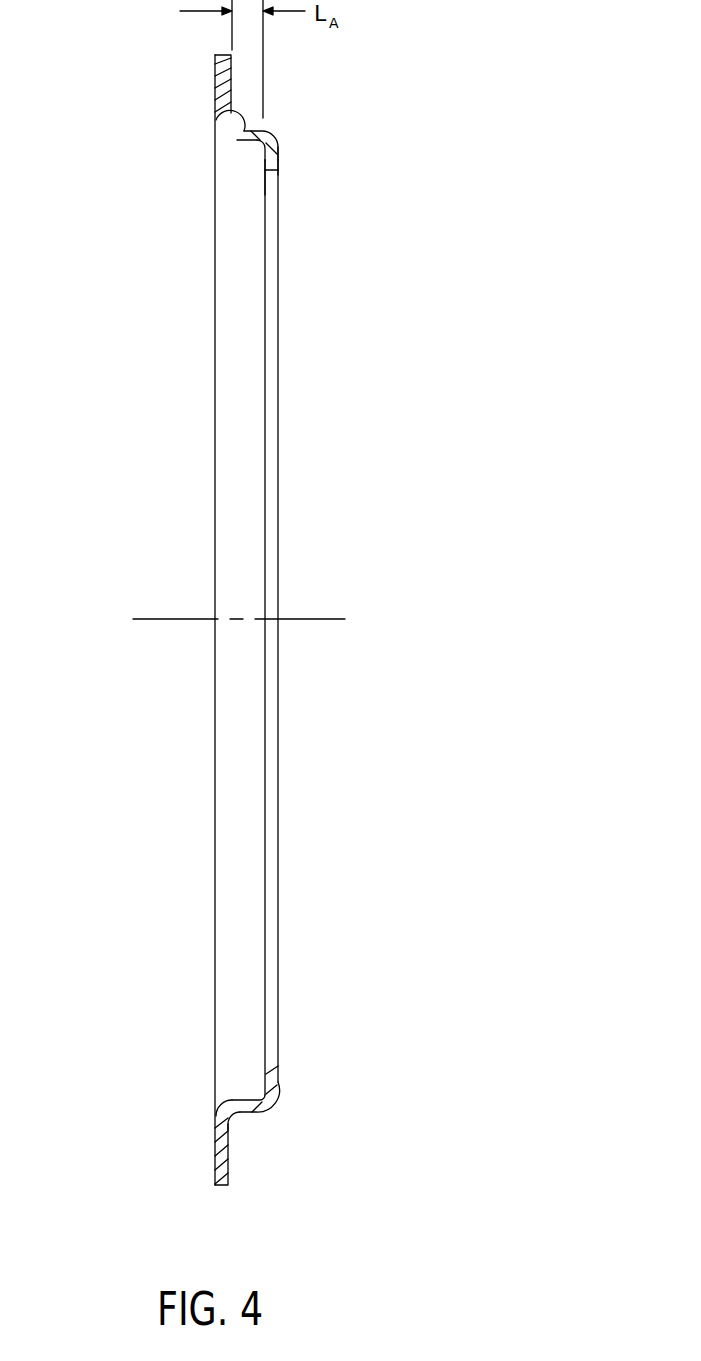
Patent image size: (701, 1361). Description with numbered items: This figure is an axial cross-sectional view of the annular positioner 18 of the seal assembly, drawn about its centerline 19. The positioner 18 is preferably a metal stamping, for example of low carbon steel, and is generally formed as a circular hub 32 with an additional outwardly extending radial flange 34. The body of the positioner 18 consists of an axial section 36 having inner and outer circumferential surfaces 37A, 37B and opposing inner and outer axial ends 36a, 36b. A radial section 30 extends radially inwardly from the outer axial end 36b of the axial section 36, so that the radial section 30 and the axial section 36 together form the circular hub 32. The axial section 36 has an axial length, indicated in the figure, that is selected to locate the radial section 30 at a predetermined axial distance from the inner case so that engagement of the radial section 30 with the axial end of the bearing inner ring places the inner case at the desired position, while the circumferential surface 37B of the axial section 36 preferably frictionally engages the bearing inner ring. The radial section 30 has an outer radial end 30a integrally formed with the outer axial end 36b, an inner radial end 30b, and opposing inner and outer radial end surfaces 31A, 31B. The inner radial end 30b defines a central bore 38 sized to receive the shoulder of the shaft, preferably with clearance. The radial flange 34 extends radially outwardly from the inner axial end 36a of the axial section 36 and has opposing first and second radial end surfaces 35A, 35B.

The annular positioner 18 is at (156, 241).
The centerline 19 is at (322, 619).
The radial section 30 is at (290, 1075).
The outer radial end 30a is at (272, 1102).
The inner radial end 30b is at (272, 1070).
The inner radial end surface 31A is at (270, 163).
The outer radial end surface 31B is at (280, 157).
The circular hub 32 is at (286, 128).
The radial flange 34 is at (203, 83).
The first radial end surface 35A is at (215, 1136).
The second radial end surface 35B is at (230, 1160).
The axial section 36 is at (255, 1122).
The inner axial end 36a is at (230, 1100).
The outer axial end 36b is at (258, 1111).
The inner circumferential surface 37A is at (247, 143).
The outer circumferential surface 37B is at (216, 117).
The central bore 38 is at (273, 262).